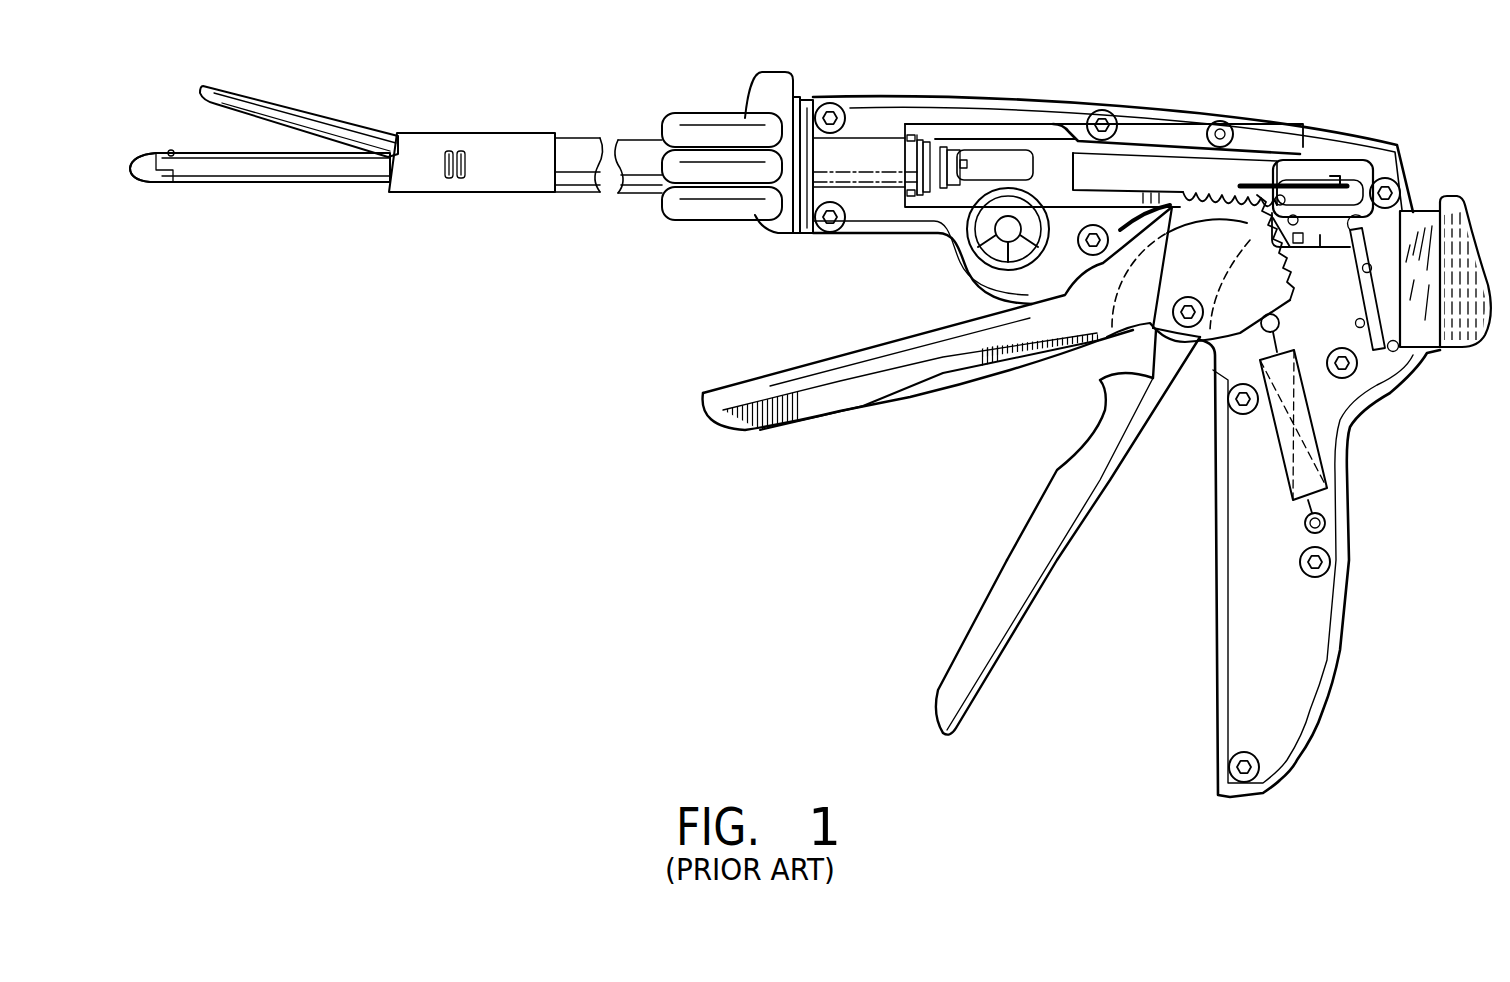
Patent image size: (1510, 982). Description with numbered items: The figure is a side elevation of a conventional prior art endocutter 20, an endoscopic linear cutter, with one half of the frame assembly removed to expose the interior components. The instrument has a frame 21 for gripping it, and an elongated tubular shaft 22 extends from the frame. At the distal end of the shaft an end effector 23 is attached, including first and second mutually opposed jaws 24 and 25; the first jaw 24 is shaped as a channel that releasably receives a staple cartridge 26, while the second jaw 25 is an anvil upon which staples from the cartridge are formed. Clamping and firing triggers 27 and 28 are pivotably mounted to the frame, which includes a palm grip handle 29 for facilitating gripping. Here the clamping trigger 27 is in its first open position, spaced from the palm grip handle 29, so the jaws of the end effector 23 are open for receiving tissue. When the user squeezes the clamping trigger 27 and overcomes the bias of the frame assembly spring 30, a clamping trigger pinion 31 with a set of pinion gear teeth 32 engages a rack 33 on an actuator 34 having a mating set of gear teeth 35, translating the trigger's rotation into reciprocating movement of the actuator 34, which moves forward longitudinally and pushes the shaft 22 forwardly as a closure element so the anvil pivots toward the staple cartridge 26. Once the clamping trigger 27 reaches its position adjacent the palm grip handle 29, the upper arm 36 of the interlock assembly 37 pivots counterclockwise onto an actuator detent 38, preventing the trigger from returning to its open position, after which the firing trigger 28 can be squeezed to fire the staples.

The endocutter 20 is at (478, 340).
The frame 21 is at (1407, 138).
The tubular shaft 22 is at (582, 137).
The end effector 23 is at (334, 90).
The first jaw 24 is at (242, 168).
The second jaw 25 is at (245, 103).
The staple cartridge 26 is at (140, 175).
The clamping trigger 27 is at (970, 668).
The firing trigger 28 is at (895, 387).
The palm grip handle 29 is at (1293, 685).
The frame assembly spring 30 is at (1310, 423).
The clamping trigger pinion 31 is at (1197, 190).
The pinion gear teeth 32 is at (1257, 205).
The rack 33 is at (1235, 190).
The actuator 34 is at (1127, 150).
The gear teeth 35 is at (1243, 208).
The upper arm 36 is at (1325, 180).
The interlock assembly 37 is at (1424, 223).
The actuator detent 38 is at (1340, 190).